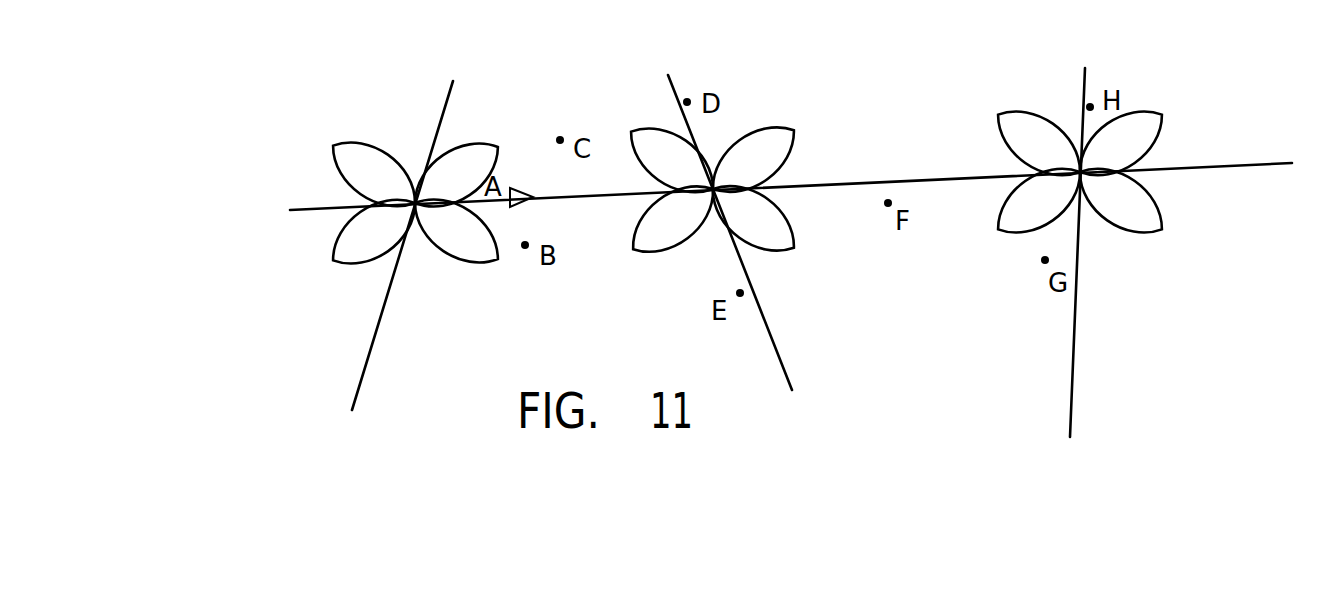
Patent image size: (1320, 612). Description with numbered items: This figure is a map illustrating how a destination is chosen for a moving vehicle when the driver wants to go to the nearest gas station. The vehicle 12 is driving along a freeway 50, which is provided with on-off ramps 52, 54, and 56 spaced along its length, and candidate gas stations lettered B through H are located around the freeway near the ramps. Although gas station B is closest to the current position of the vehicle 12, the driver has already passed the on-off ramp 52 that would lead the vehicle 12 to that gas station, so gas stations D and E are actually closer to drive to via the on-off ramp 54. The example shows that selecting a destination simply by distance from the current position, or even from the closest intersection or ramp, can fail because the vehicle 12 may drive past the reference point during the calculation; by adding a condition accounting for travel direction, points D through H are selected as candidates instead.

The vehicle 12 is at (521, 187).
The freeway 50 is at (314, 212).
The on-off ramp 52 is at (356, 143).
The on-off ramp 54 is at (768, 124).
The on-off ramp 56 is at (1157, 110).